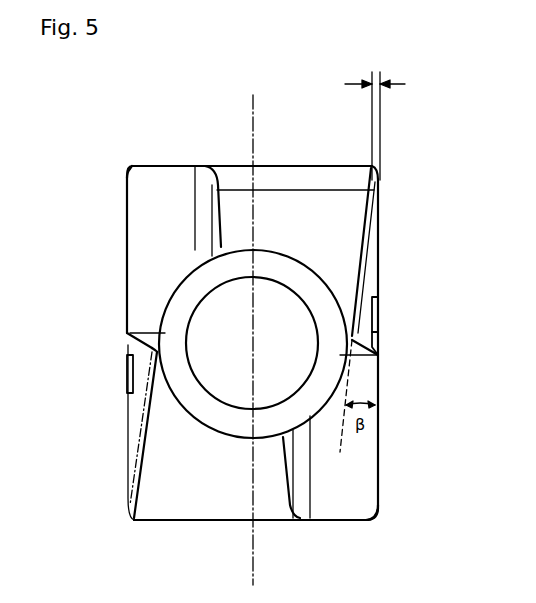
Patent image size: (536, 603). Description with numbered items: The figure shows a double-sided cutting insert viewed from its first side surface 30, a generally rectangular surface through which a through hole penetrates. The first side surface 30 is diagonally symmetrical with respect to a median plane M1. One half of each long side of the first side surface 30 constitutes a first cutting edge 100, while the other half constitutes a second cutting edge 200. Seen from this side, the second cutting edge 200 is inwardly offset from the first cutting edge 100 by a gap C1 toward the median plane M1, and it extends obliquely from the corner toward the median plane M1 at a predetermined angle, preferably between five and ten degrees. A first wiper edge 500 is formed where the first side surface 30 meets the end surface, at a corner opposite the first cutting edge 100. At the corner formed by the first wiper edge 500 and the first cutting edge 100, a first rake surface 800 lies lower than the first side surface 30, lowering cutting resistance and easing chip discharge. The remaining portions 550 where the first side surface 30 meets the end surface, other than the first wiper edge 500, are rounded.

The first cutting edge 100 is at (127, 249).
The second cutting edge 200 is at (140, 457).
The first side surface 30 is at (296, 200).
The first wiper edge 500 is at (173, 165).
The rounded portions 550 is at (185, 510).
The first rake surface 800 is at (128, 186).
The median plane M1 is at (252, 329).
The gap C1 is at (375, 116).